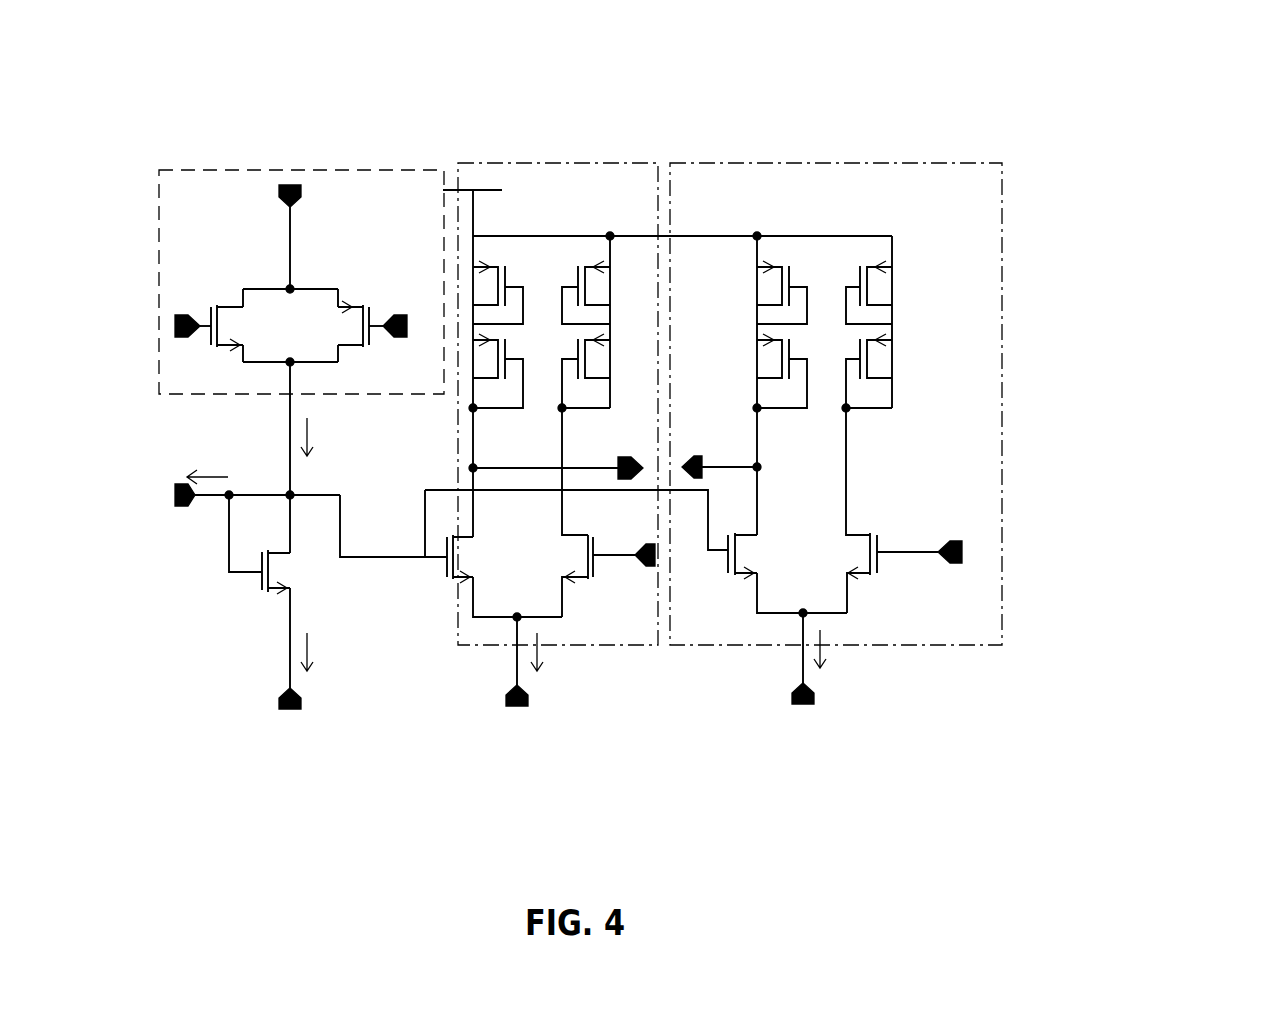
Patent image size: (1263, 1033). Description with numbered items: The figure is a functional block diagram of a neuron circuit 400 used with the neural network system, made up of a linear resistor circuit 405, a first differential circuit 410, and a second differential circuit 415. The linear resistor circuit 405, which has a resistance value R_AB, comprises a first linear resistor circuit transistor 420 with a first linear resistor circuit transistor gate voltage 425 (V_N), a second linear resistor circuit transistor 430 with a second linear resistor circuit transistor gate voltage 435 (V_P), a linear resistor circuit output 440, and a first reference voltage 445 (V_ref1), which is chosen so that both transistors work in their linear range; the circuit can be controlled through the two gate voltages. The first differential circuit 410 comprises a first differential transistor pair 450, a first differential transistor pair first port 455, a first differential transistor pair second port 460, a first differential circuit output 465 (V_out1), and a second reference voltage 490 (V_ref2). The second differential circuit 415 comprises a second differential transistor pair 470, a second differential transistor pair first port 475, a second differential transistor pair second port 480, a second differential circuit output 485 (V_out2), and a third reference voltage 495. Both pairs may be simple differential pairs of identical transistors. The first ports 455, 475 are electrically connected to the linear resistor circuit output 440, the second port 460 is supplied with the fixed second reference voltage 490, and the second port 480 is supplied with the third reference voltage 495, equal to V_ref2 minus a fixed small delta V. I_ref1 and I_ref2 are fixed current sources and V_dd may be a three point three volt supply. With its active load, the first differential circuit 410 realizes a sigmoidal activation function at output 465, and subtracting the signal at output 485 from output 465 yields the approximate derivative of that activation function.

The neuron circuit 400 is at (1227, 62).
The linear resistor circuit 405 is at (232, 169).
The first differential circuit 410 is at (500, 163).
The second differential circuit 415 is at (695, 163).
The first linear resistor circuit transistor 420 is at (228, 341).
The first linear resistor circuit transistor gate voltage 425 is at (173, 323).
The second linear resistor circuit transistor 430 is at (337, 311).
The second linear resistor circuit transistor gate voltage 435 is at (404, 338).
The linear resistor circuit output 440 is at (290, 407).
The first reference voltage 445 is at (292, 186).
The first differential transistor pair 450 is at (485, 599).
The first differential transistor pair first port 455 is at (433, 560).
The first differential transistor pair second port 460 is at (650, 566).
The first differential circuit output 465 is at (630, 457).
The second differential transistor pair 470 is at (778, 611).
The second differential transistor pair first port 475 is at (727, 553).
The second differential transistor pair second port 480 is at (962, 547).
The second differential circuit output 485 is at (706, 477).
The second reference voltage 490 is at (605, 597).
The third reference voltage 495 is at (952, 607).